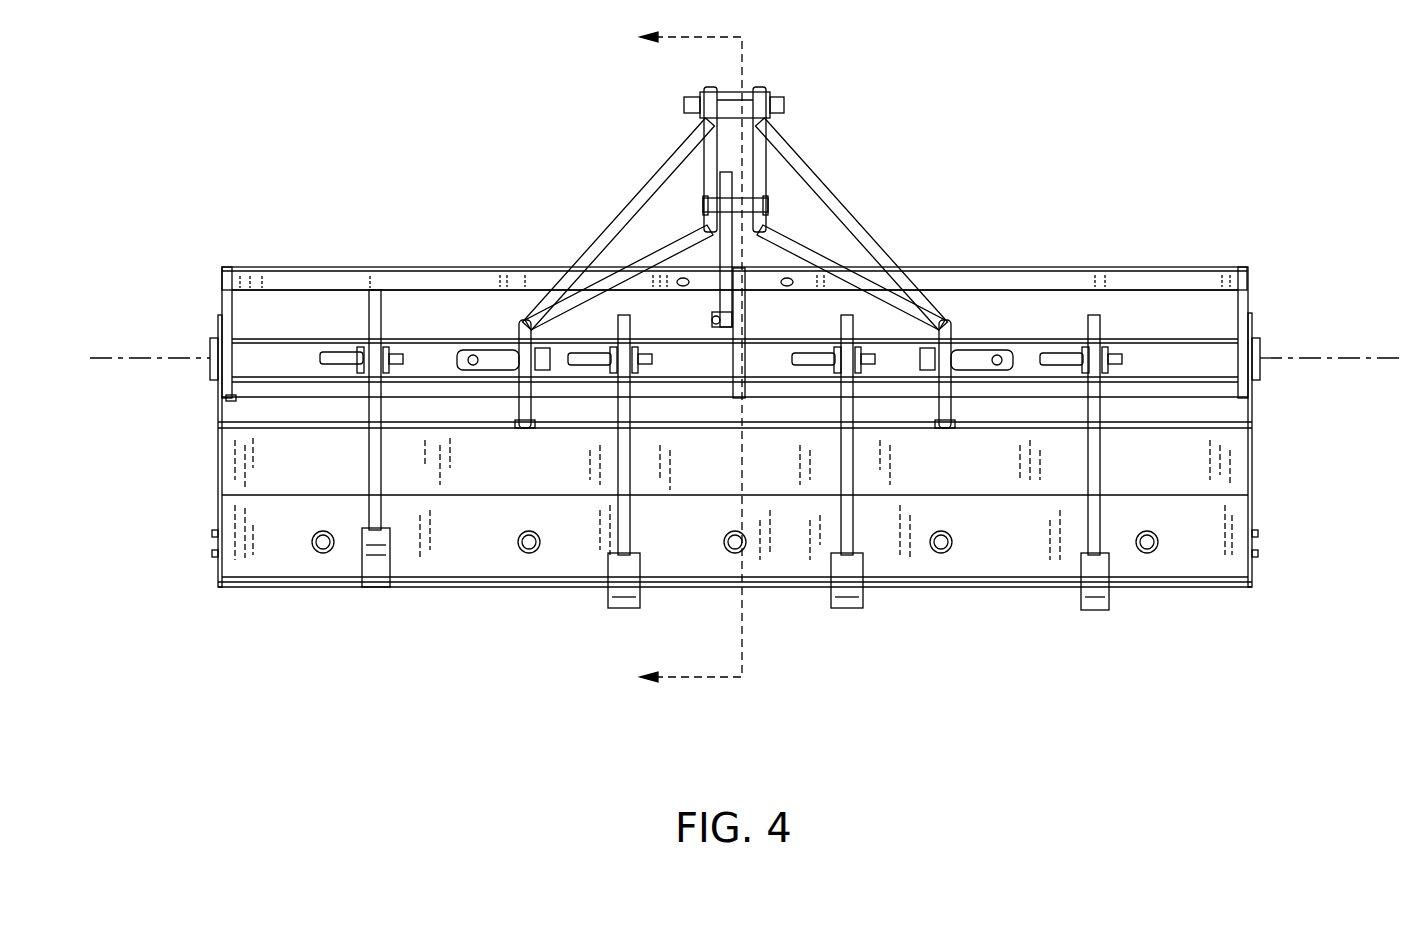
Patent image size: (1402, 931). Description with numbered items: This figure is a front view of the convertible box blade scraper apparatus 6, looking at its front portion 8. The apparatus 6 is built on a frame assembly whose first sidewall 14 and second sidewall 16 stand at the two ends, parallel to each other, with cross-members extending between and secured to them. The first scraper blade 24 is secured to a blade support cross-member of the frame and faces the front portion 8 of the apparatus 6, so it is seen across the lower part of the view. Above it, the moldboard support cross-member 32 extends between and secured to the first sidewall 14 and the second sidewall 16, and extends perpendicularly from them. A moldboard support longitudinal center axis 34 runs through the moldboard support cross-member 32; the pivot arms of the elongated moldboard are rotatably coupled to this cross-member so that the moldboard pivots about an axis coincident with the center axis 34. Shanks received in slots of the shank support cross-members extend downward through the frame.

The convertible box blade scraper apparatus 6 is at (988, 120).
The front portion 8 is at (677, 360).
The first sidewall 14 is at (218, 470).
The second sidewall 16 is at (1252, 460).
The first scraper blade 24 is at (1012, 560).
The moldboard support cross-member 32 is at (1182, 355).
The moldboard support longitudinal center axis 34 is at (1330, 357).